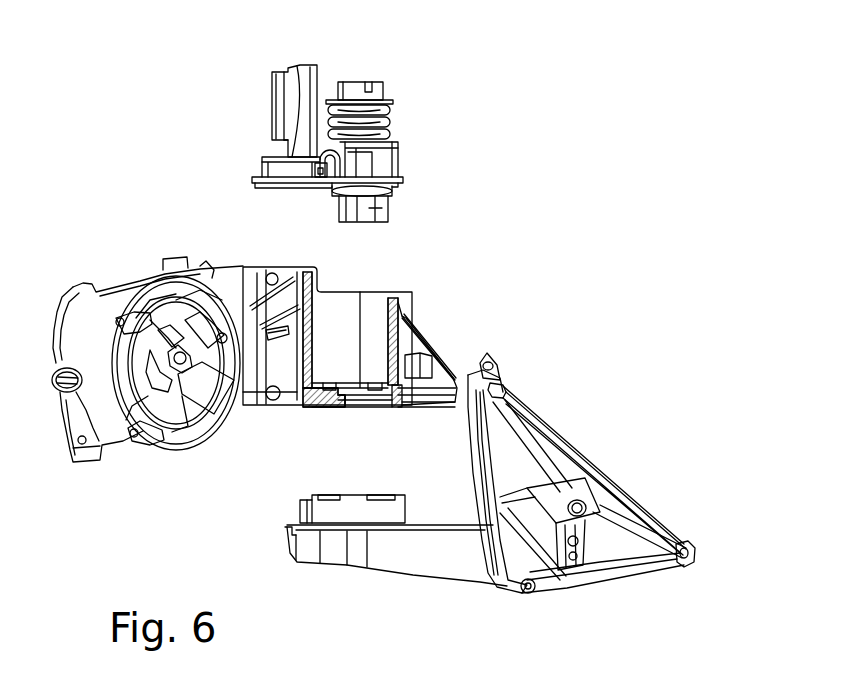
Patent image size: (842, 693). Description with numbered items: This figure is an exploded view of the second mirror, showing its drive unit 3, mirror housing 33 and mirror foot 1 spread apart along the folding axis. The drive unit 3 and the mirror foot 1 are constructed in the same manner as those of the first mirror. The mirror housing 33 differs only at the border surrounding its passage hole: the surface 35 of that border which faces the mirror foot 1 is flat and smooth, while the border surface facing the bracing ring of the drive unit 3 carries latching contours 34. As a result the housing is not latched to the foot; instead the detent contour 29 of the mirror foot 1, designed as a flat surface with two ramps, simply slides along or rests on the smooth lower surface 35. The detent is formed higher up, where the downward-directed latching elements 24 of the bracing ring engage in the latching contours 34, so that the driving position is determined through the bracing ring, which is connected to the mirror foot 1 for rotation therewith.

The mirror foot 1 is at (335, 547).
The drive unit 3 is at (416, 110).
The latching elements 24 is at (400, 184).
The detent contour 29 is at (365, 500).
The mirror housing 33 is at (235, 255).
The latching contours 34 is at (380, 380).
The surface of the border 35 is at (325, 404).